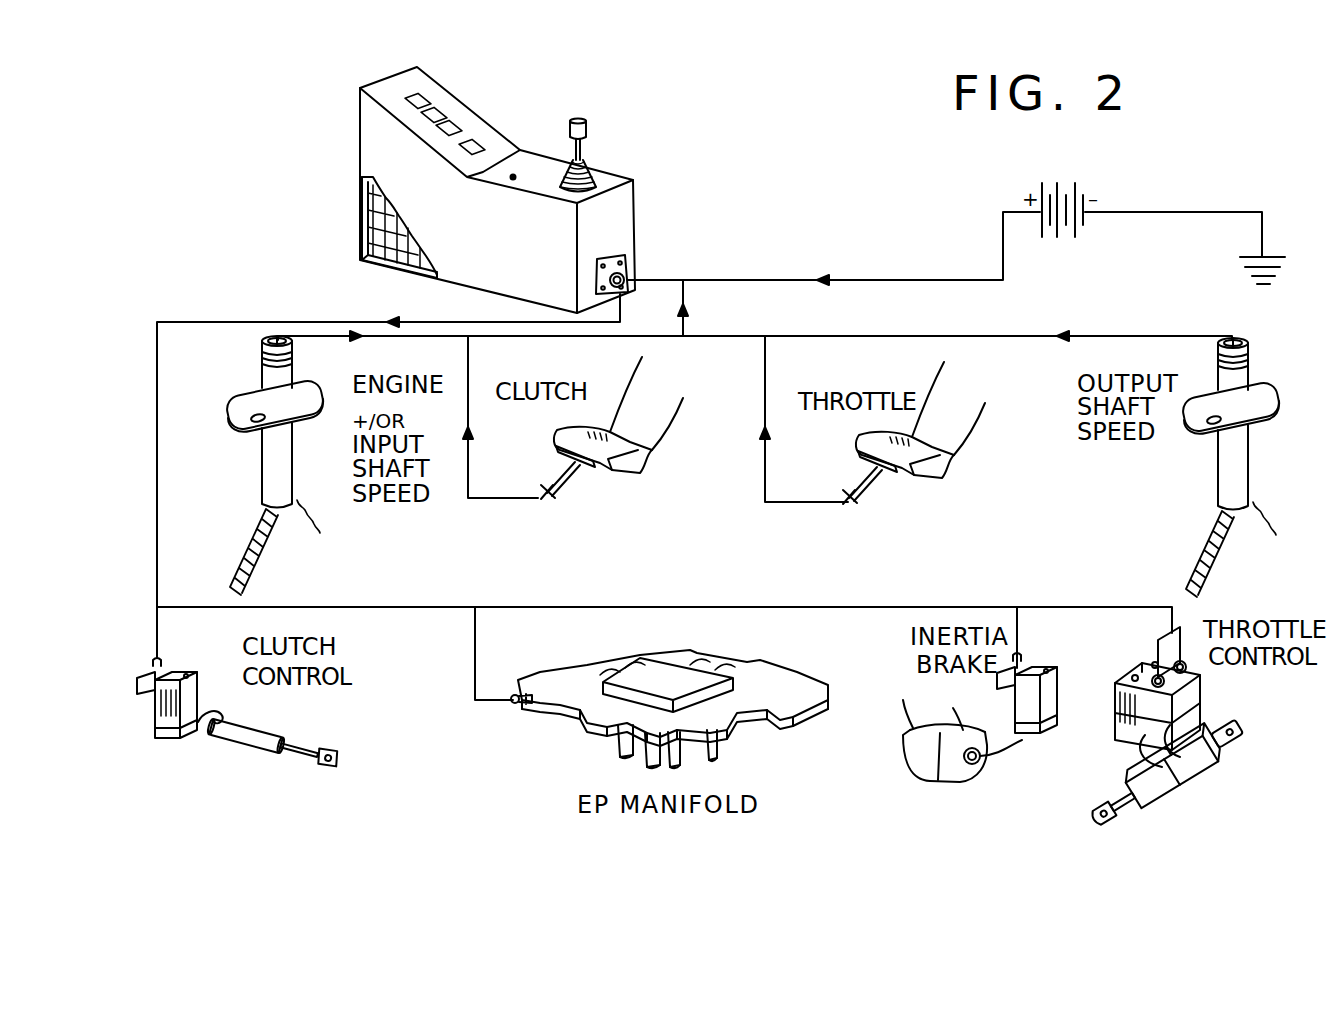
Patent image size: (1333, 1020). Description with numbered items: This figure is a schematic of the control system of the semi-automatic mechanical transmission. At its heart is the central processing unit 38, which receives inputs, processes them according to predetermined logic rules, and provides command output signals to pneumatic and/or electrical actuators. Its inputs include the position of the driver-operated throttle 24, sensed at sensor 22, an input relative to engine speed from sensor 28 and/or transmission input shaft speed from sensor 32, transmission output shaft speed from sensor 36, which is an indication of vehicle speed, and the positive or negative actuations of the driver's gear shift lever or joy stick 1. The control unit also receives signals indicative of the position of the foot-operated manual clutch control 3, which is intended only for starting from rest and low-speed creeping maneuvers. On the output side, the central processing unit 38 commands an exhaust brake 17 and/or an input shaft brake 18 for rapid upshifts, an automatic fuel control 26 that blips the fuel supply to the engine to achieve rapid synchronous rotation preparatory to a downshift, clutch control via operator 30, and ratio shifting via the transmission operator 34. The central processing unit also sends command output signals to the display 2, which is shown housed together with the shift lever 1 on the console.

The gear shift lever 1 is at (587, 130).
The display 2 is at (497, 190).
The manual clutch control 3 is at (577, 478).
The exhaust brake 17 is at (1040, 667).
The input shaft brake 18 is at (1018, 701).
The sensor 22 is at (880, 490).
The throttle 24 is at (915, 454).
The automatic fuel control 26 is at (1208, 688).
The sensor 28 is at (247, 465).
The operator 30 is at (285, 715).
The sensor 32 is at (275, 465).
The transmission operator 34 is at (785, 662).
The sensor 36 is at (1193, 498).
The central processing unit 38 is at (487, 250).